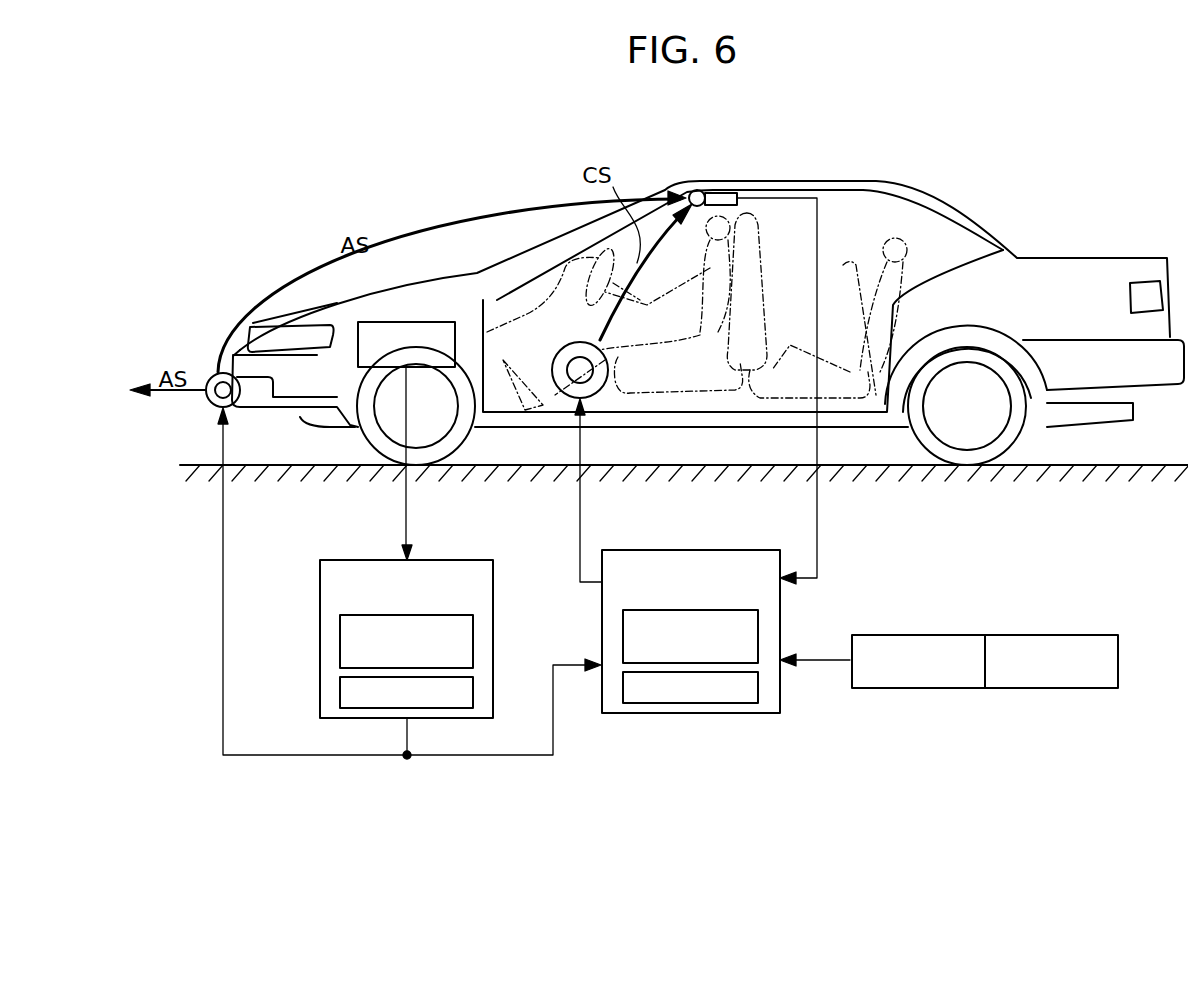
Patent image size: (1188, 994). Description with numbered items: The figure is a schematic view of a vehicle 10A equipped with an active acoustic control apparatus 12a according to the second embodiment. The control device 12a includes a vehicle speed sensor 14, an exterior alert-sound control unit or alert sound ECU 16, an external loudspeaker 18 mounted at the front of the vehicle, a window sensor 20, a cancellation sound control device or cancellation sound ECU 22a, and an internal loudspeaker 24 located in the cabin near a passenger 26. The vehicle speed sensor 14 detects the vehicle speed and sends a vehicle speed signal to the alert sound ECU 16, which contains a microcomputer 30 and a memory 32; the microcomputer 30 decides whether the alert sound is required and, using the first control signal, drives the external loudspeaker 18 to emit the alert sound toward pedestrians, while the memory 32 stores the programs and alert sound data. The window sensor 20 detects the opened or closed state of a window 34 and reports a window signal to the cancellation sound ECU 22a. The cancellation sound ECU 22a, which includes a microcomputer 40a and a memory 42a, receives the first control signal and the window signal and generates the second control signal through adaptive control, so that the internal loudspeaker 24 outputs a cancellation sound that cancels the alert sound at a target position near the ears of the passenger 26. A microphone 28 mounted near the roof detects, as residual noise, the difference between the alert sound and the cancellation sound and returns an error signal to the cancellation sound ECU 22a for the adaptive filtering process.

The vehicle 10A is at (501, 186).
The active acoustic control apparatus 12a is at (592, 760).
The vehicle speed sensor 14 is at (438, 321).
The exterior alert-sound control unit 16 is at (427, 615).
The external loudspeaker 18 is at (213, 378).
The window sensor 20 is at (917, 633).
The cancellation sound control device 22a is at (718, 611).
The internal loudspeaker 24 is at (570, 402).
The passenger 26 is at (770, 197).
The microphone 28 is at (720, 192).
The microcomputer 30 is at (473, 637).
The memory 32 is at (473, 690).
The window 34 is at (1050, 633).
The microcomputer 40a is at (758, 622).
The memory 42a is at (758, 690).